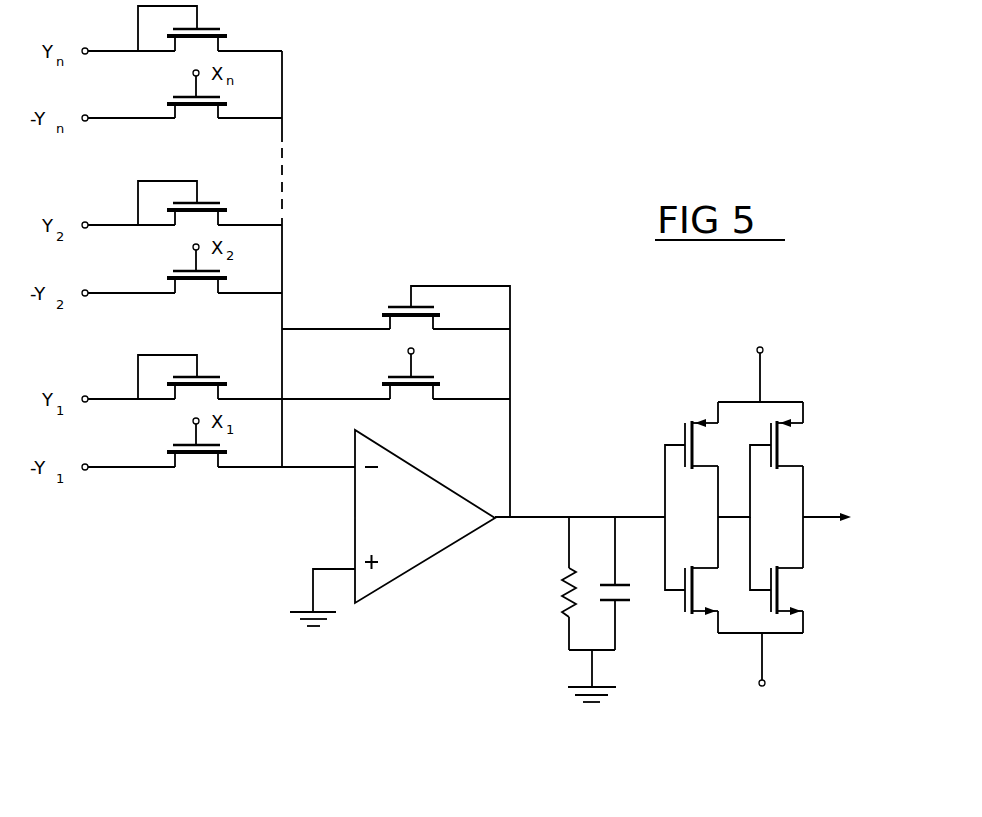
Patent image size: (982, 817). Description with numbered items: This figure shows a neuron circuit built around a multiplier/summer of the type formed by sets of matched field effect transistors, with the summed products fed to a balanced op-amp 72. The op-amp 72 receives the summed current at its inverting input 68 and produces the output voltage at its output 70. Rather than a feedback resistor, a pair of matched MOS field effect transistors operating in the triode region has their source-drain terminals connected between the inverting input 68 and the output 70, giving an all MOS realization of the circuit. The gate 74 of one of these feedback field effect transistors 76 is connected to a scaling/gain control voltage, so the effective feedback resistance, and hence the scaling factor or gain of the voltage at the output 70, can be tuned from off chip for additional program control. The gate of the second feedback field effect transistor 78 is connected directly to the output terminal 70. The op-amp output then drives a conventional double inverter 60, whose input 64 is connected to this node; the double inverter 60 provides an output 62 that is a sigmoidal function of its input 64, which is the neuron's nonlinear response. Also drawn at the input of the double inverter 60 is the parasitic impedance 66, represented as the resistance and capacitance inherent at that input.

The double inverter 60 is at (668, 399).
The output 62 is at (822, 517).
The input 64 is at (642, 517).
The parasitic impedance 66 is at (567, 610).
The inverting input 68 is at (313, 469).
The output 70 is at (555, 517).
The op-amp 72 is at (417, 570).
The gate 74 is at (410, 363).
The feedback field effect transistor 76 is at (403, 388).
The second feedback field effect transistor 78 is at (401, 306).